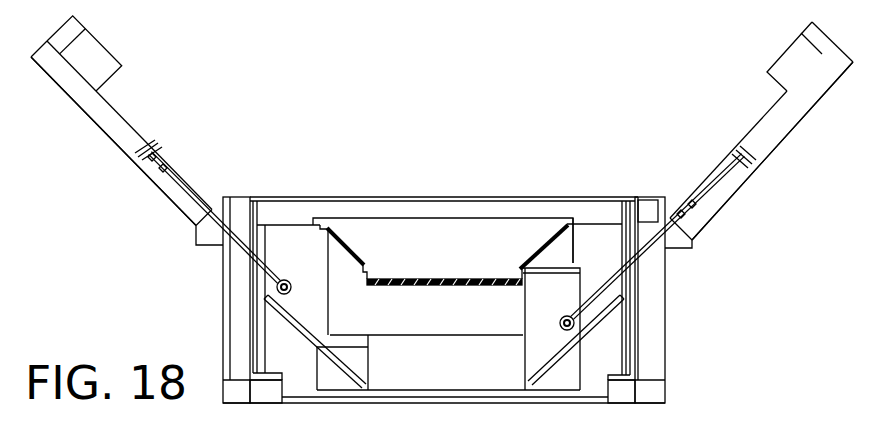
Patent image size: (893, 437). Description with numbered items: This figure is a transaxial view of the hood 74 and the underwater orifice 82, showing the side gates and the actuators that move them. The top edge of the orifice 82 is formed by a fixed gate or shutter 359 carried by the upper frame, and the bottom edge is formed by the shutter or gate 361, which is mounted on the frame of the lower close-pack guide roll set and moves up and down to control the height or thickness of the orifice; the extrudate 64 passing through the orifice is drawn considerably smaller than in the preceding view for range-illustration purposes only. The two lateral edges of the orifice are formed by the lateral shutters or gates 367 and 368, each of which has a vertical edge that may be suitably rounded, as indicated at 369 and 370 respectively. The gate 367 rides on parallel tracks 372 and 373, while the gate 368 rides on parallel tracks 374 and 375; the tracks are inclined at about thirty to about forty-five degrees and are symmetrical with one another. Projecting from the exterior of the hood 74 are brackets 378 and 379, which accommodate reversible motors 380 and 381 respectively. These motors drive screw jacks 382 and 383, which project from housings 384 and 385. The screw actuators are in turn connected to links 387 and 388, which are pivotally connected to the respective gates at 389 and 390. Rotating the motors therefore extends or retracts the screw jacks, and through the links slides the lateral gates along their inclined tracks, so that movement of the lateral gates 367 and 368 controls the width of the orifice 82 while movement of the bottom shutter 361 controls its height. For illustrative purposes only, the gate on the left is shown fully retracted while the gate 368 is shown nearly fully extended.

The housing 74 is at (591, 187).
The circuit board 64 is at (447, 278).
The underwater orifice 82 is at (411, 332).
The fixed gate or shutter 359 is at (438, 228).
The bottom shutter or gate 361 is at (473, 357).
The lateral shutter or gate 367 is at (343, 240).
The lateral shutter or gate 368 is at (550, 292).
The rounded vertical edge 369 is at (330, 295).
The rounded vertical edge 370 is at (523, 300).
The parallel track 372 is at (347, 253).
The parallel track 373 is at (296, 330).
The parallel track 374 is at (541, 249).
The parallel track 375 is at (556, 364).
The bracket 378 is at (163, 189).
The bracket 379 is at (733, 193).
The reversible motor 380 is at (86, 57).
The reversible motor 381 is at (792, 61).
The screw jack 382 is at (149, 154).
The screw jack 383 is at (727, 170).
The housing 384 is at (107, 114).
The housing 385 is at (782, 117).
The link 387 is at (232, 248).
The link 388 is at (642, 258).
The pivotal connection 389 is at (275, 289).
The pivotal connection 390 is at (579, 327).